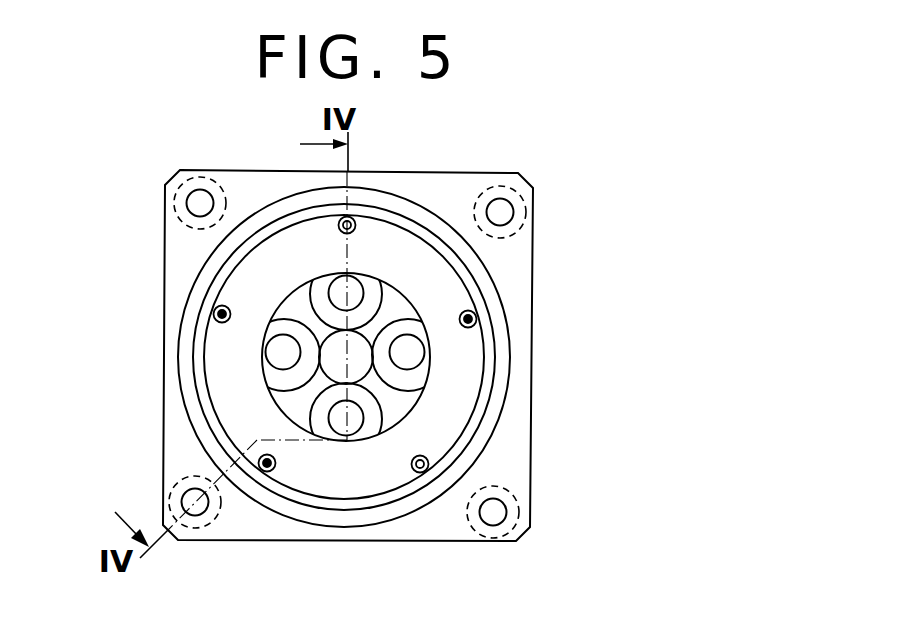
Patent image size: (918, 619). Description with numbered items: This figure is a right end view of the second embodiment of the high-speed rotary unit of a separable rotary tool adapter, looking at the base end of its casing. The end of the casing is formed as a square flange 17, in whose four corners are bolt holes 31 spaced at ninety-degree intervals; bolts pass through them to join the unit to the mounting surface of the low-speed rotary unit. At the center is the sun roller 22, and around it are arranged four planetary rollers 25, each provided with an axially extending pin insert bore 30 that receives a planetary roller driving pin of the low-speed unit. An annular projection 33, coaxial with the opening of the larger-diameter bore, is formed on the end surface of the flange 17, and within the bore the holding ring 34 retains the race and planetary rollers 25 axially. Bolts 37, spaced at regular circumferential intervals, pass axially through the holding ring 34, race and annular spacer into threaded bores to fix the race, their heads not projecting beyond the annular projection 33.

The flange 17 is at (181, 443).
The sun roller 22 is at (338, 342).
The planetary rollers 25 is at (322, 298).
The pin insert bores 30 is at (353, 295).
The bolt holes 31 is at (500, 212).
The annular projection 33 is at (408, 488).
The holding ring 34 is at (462, 365).
The bolts 37 is at (214, 313).